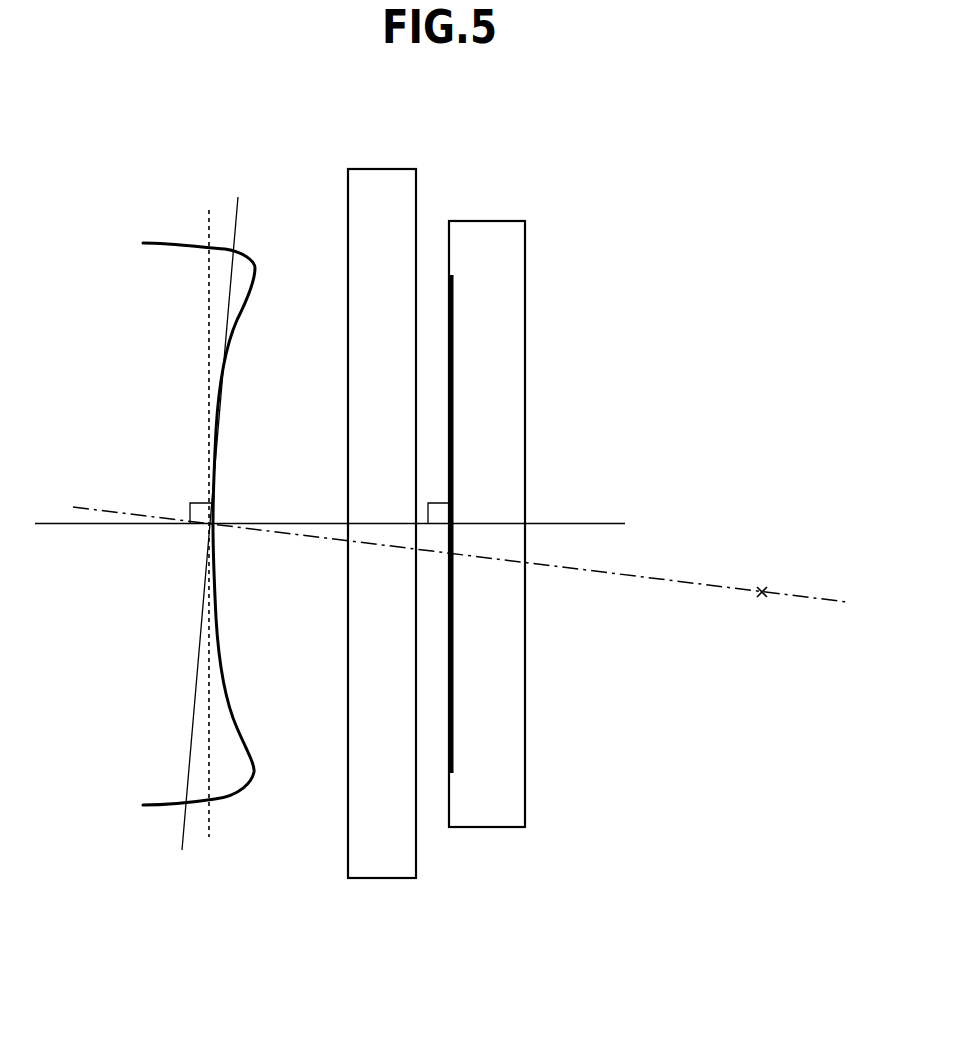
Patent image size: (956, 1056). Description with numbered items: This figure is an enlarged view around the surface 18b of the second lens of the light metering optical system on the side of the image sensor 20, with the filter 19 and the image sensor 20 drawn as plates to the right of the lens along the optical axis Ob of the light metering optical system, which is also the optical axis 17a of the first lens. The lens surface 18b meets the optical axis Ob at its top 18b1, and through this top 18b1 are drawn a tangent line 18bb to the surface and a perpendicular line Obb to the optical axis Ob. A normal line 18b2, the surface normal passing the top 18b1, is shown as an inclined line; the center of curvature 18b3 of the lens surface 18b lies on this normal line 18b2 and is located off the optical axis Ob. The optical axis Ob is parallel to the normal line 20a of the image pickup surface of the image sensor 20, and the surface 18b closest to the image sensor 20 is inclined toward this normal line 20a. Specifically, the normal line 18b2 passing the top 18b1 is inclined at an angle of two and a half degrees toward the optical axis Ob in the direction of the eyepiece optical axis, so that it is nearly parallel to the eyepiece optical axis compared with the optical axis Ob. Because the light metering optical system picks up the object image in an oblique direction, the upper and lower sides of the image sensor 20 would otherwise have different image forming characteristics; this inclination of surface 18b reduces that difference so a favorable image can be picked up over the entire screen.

The optical axis of the first lens 17a is at (103, 525).
The optical axis of the light metering optical system Ob is at (330, 551).
The perpendicular line Obb is at (212, 826).
The lens surface 18b is at (255, 269).
The top 18b1 is at (214, 526).
The normal line 18b2 is at (137, 515).
The center of curvature 18b3 is at (762, 587).
The tangent line 18bb is at (182, 832).
The filter 19 is at (383, 172).
The image sensor 20 is at (488, 228).
The normal line of the image pickup surface 20a is at (572, 522).